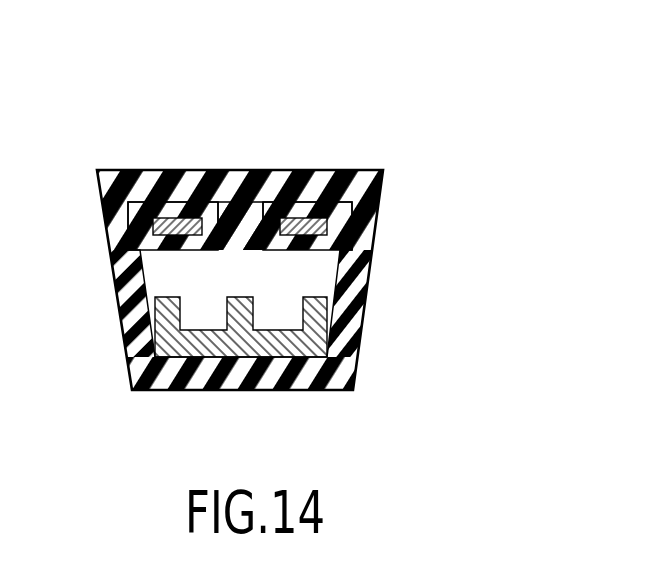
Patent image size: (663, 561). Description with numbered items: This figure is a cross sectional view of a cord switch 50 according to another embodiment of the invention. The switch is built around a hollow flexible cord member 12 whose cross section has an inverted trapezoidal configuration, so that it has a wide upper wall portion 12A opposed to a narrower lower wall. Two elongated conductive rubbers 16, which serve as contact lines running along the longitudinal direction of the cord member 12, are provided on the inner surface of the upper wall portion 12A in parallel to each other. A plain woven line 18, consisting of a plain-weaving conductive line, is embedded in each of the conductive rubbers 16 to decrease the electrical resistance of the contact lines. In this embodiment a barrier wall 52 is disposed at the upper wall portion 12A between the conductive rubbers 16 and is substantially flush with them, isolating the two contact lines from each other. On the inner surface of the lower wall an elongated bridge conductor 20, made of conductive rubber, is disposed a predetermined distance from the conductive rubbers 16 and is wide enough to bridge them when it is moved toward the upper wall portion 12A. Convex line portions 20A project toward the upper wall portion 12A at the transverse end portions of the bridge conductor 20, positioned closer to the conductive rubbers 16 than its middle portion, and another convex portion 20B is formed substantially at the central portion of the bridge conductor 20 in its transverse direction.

The cord switch 50 is at (434, 64).
The cord member 12 is at (380, 192).
The upper wall portion 12A is at (230, 176).
The conductive rubbers 16 is at (157, 192).
The plain woven line 18 is at (130, 208).
The bridge conductor 20 is at (188, 366).
The convex line portions 20A is at (162, 296).
The convex portion 20B is at (246, 294).
The barrier wall 52 is at (236, 256).